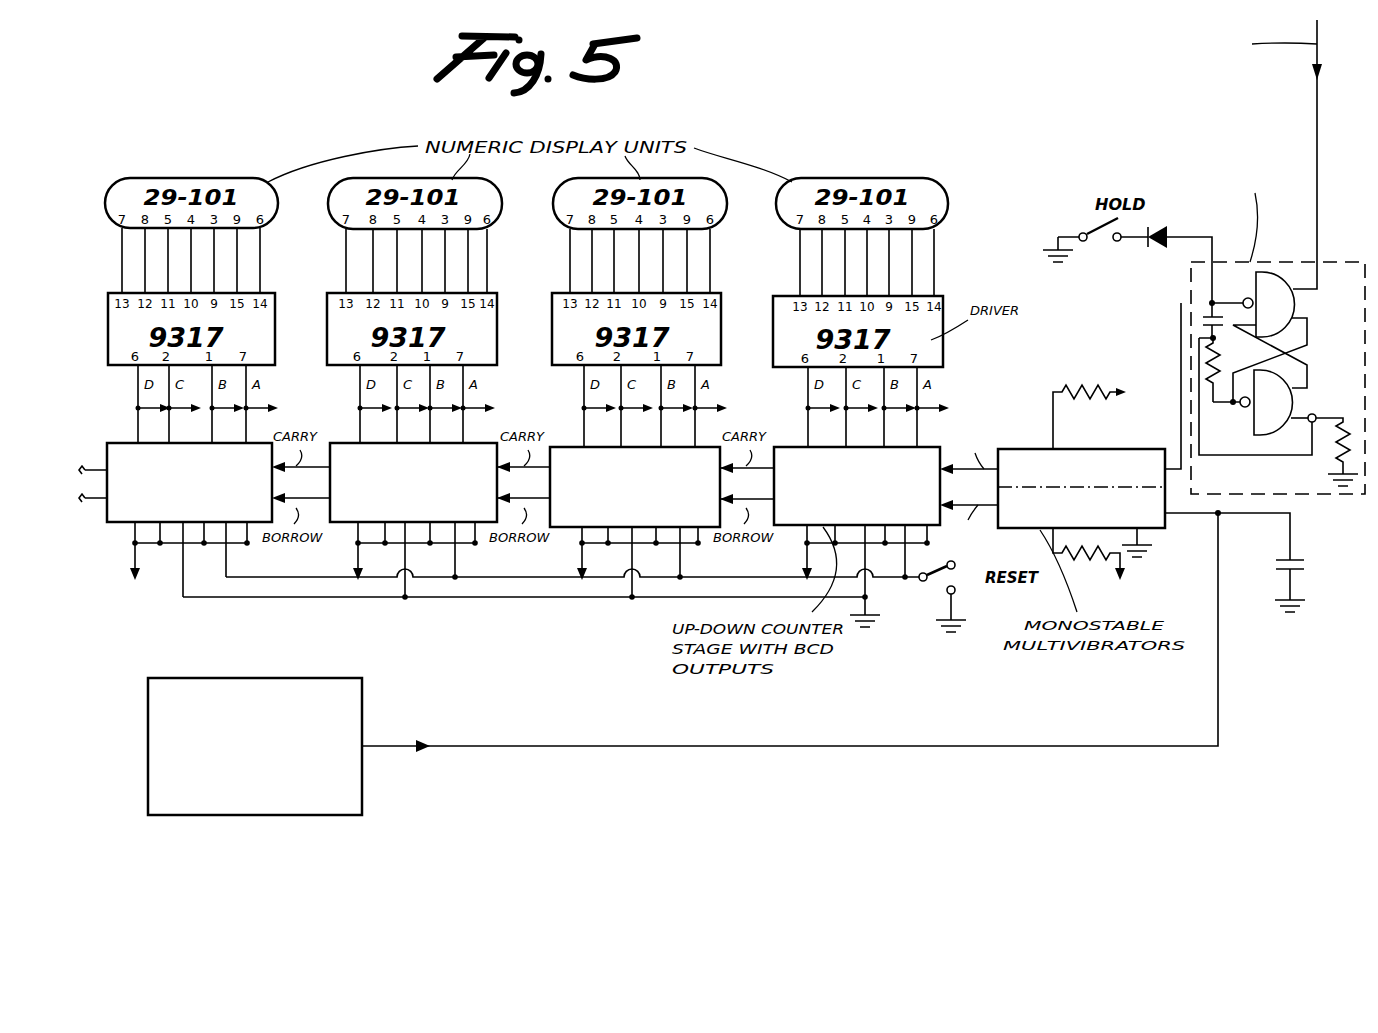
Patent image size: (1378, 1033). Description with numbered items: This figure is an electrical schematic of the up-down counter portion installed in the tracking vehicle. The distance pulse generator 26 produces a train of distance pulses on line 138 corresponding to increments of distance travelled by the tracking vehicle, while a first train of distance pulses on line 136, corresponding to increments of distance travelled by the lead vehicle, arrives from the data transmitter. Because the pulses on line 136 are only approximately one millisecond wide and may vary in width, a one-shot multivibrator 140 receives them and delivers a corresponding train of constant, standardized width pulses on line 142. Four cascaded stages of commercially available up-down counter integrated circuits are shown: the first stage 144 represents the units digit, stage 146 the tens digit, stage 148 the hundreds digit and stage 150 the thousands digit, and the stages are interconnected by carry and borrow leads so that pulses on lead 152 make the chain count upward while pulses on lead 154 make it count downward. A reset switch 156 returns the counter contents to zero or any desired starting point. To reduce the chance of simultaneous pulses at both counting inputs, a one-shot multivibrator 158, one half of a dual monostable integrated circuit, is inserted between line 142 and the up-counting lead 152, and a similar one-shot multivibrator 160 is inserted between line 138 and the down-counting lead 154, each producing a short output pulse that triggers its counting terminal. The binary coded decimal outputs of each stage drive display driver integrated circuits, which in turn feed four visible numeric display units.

The distance pulse generator 26 is at (362, 718).
The line 136 is at (1317, 133).
The line 138 is at (1218, 685).
The one-shot multivibrator 140 is at (1333, 498).
The line 142 is at (1180, 343).
The first stage 144 is at (730, 527).
The stage 146 is at (540, 527).
The stage 148 is at (318, 525).
The stage 150 is at (105, 524).
The lead 152 is at (936, 447).
The lead 154 is at (994, 500).
The reset switch 156 is at (926, 592).
The one-shot multivibrator 158 is at (1090, 458).
The one-shot multivibrator 160 is at (1165, 528).